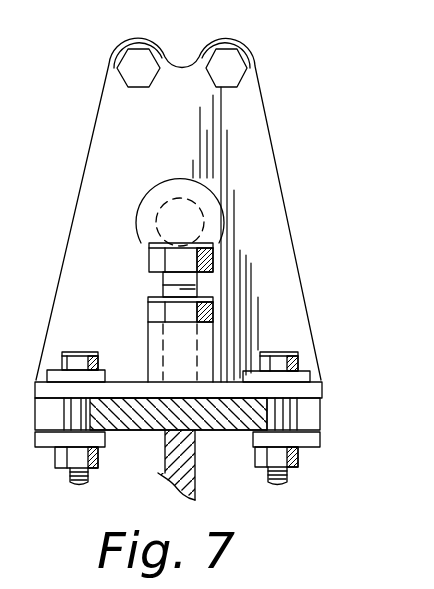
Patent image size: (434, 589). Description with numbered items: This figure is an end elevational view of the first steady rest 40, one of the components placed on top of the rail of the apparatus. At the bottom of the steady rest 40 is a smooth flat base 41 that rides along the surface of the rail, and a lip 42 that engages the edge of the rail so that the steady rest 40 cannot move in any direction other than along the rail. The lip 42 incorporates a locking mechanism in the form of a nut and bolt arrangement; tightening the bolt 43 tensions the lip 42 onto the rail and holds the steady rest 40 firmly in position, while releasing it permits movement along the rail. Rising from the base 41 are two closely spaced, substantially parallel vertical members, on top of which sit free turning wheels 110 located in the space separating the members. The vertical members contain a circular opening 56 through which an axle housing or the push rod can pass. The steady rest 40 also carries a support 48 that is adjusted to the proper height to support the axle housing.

The free turning wheels 110 is at (254, 50).
The circular opening 56 is at (224, 206).
The support 48 is at (213, 252).
The steady rest 40 is at (287, 296).
The base 41 is at (313, 392).
The lip 42 is at (317, 437).
The bolt 43 is at (287, 483).